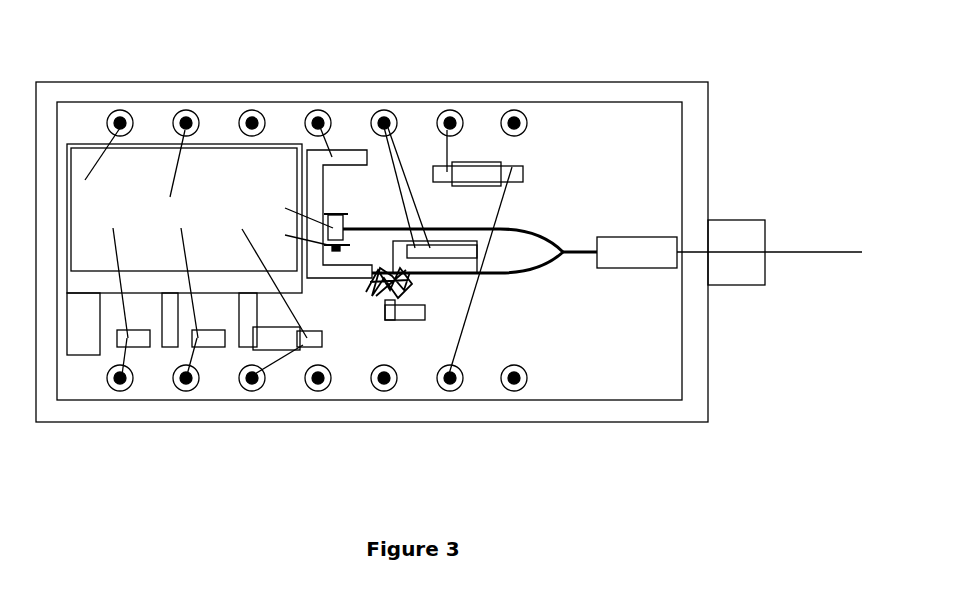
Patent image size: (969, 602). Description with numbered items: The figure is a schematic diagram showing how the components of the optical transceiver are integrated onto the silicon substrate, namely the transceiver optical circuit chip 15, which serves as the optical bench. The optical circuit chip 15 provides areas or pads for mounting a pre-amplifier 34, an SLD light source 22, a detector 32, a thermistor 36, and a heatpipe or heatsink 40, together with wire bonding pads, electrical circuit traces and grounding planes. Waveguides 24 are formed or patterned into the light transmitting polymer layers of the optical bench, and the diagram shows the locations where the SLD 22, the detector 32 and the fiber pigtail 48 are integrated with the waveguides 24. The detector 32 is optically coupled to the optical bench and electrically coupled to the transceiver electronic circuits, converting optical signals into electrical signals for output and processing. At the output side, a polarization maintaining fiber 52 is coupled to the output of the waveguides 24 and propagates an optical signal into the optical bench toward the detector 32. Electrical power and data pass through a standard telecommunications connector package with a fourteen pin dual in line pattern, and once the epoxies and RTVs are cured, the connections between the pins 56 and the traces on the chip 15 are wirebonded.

The transceiver optical circuit chip 15 is at (613, 390).
The SLD light source 22 is at (397, 277).
The waveguides 24 is at (386, 230).
The detector 32 is at (334, 219).
The pre-amplifier 34 is at (210, 176).
The thermistor 36 is at (470, 176).
The heatpipe or heatsink 40 is at (375, 277).
The fiber pigtail 48 is at (648, 242).
The polarization maintaining fiber 52 is at (797, 252).
The pins 56 is at (121, 122).